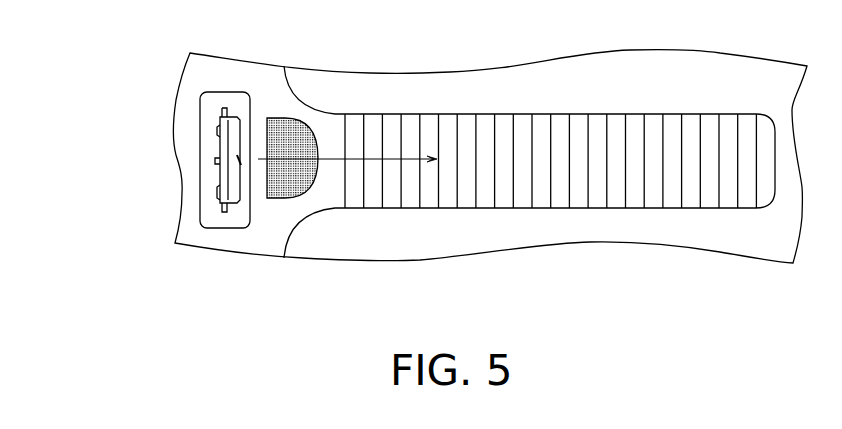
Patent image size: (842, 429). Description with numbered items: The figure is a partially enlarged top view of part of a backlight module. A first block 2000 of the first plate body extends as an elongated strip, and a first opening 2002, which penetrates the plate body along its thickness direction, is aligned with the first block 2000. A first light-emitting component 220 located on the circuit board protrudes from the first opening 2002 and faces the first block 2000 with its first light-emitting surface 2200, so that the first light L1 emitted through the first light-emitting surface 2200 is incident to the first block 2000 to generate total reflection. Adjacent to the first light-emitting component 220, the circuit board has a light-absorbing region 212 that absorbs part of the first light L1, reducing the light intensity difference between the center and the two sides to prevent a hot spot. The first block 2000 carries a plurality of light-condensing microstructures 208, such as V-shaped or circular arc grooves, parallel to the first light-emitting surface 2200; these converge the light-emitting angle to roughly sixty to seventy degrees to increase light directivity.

The first block 2000 is at (267, 83).
The first opening 2002 is at (198, 185).
The first light-emitting component 220 is at (232, 132).
The first light-emitting surface 2200 is at (240, 162).
The light-absorbing region 212 is at (302, 180).
The light-condensing microstructure 208 is at (387, 193).
The first light L1 is at (357, 158).